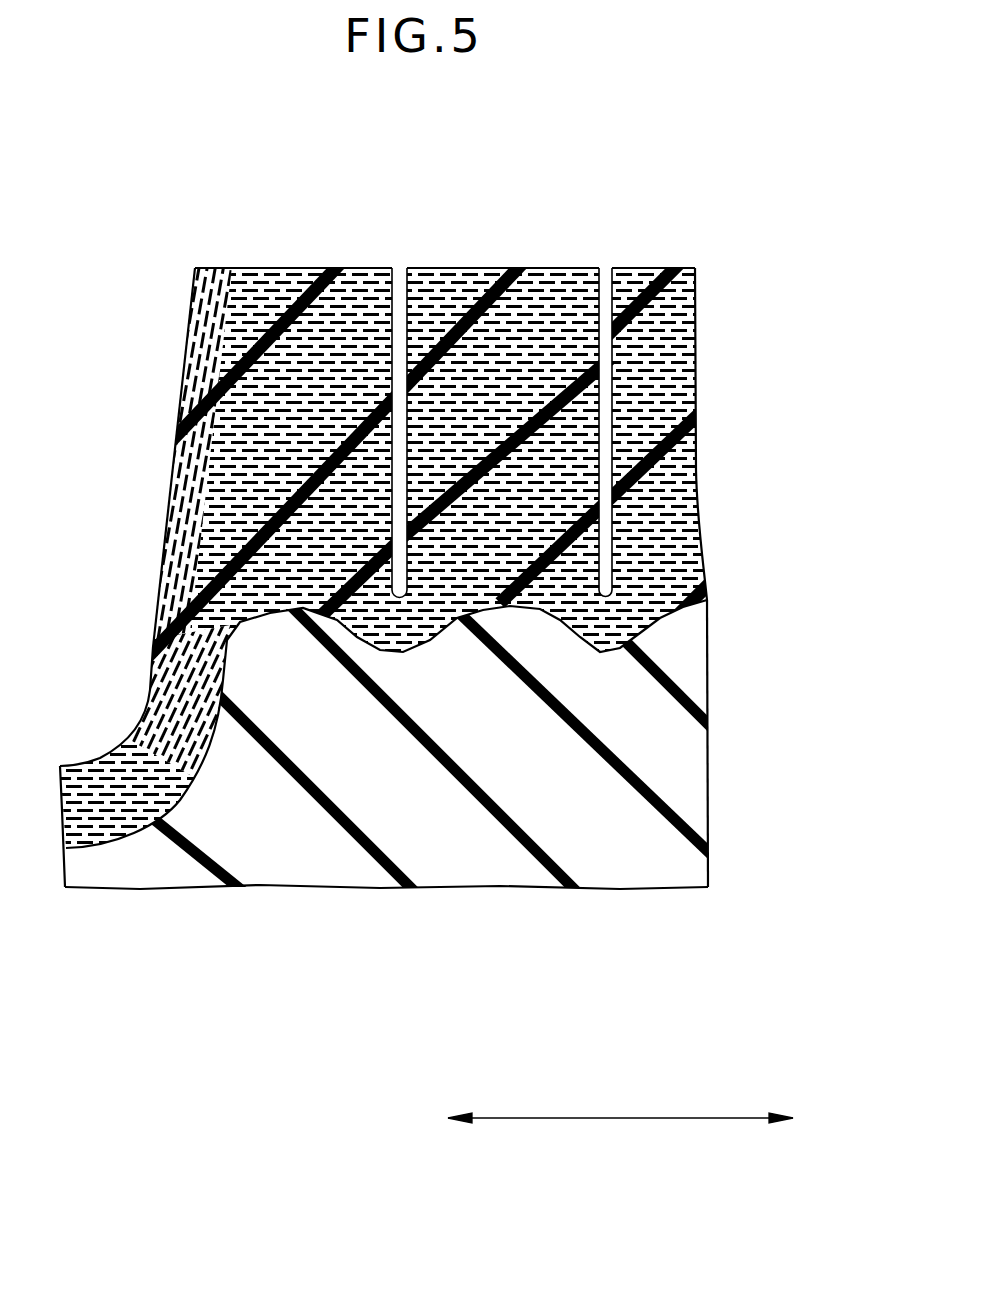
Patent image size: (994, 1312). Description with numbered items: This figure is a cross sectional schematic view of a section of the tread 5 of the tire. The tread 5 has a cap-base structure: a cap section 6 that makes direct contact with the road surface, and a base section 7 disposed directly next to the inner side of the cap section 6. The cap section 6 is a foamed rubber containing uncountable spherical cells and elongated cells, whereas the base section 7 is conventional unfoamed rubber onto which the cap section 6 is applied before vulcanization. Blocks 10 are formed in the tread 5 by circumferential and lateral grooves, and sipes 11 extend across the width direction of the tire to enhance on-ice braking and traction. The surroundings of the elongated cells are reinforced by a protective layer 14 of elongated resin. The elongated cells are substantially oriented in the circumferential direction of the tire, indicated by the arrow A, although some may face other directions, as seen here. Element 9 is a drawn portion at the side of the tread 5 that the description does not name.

The tread 5 is at (466, 523).
The cap section 6 is at (417, 499).
The base section 7 is at (688, 745).
The curved side portion 9 is at (138, 715).
The block 10 is at (559, 252).
The sipe 11 is at (398, 287).
The protective layer 14 is at (247, 277).
The arrow direction A is at (630, 1118).